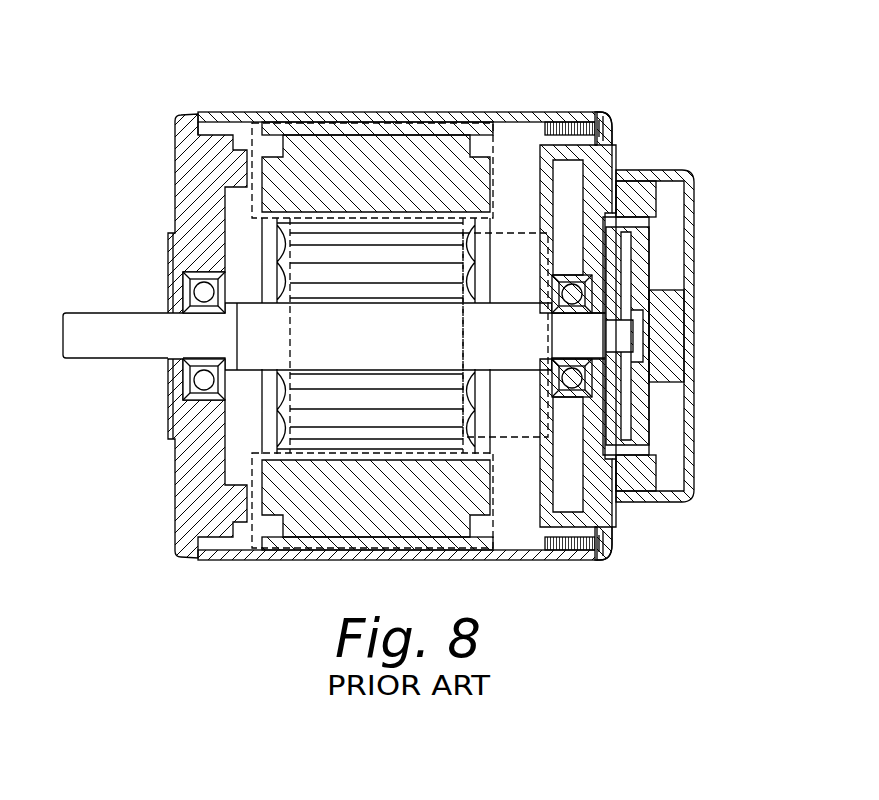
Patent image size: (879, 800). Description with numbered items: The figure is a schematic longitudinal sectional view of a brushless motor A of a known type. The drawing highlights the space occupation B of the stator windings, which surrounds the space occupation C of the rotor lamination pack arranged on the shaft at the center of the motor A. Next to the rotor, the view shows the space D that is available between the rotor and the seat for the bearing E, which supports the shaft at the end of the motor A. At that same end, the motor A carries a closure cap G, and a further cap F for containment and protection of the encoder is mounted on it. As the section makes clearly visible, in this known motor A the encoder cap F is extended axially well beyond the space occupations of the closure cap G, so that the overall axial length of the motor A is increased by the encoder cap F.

The brushless motor A is at (383, 82).
The space occupation of the stator windings B is at (244, 182).
The space occupation of the rotor lamination pack C is at (277, 413).
The space available between the rotor and the seat for the bearing D is at (524, 222).
The bearing E is at (567, 400).
The cap for containment and protection of the encoder F is at (672, 318).
The closure cap G is at (602, 508).